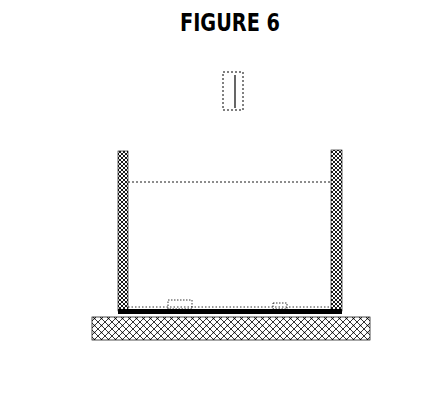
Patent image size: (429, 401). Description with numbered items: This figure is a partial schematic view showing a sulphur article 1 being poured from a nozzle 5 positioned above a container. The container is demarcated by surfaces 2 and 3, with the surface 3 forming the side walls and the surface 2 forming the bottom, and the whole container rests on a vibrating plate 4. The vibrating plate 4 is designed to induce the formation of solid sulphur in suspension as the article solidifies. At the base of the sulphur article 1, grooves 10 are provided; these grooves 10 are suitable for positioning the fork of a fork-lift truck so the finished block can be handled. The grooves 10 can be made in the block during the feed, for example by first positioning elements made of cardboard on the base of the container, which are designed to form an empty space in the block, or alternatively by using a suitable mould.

The sulphur article 1 is at (315, 202).
The surface 2 is at (117, 305).
The surface 3 is at (120, 213).
The vibrating plate 4 is at (358, 316).
The nozzle 5 is at (238, 92).
The grooves 10 is at (168, 308).